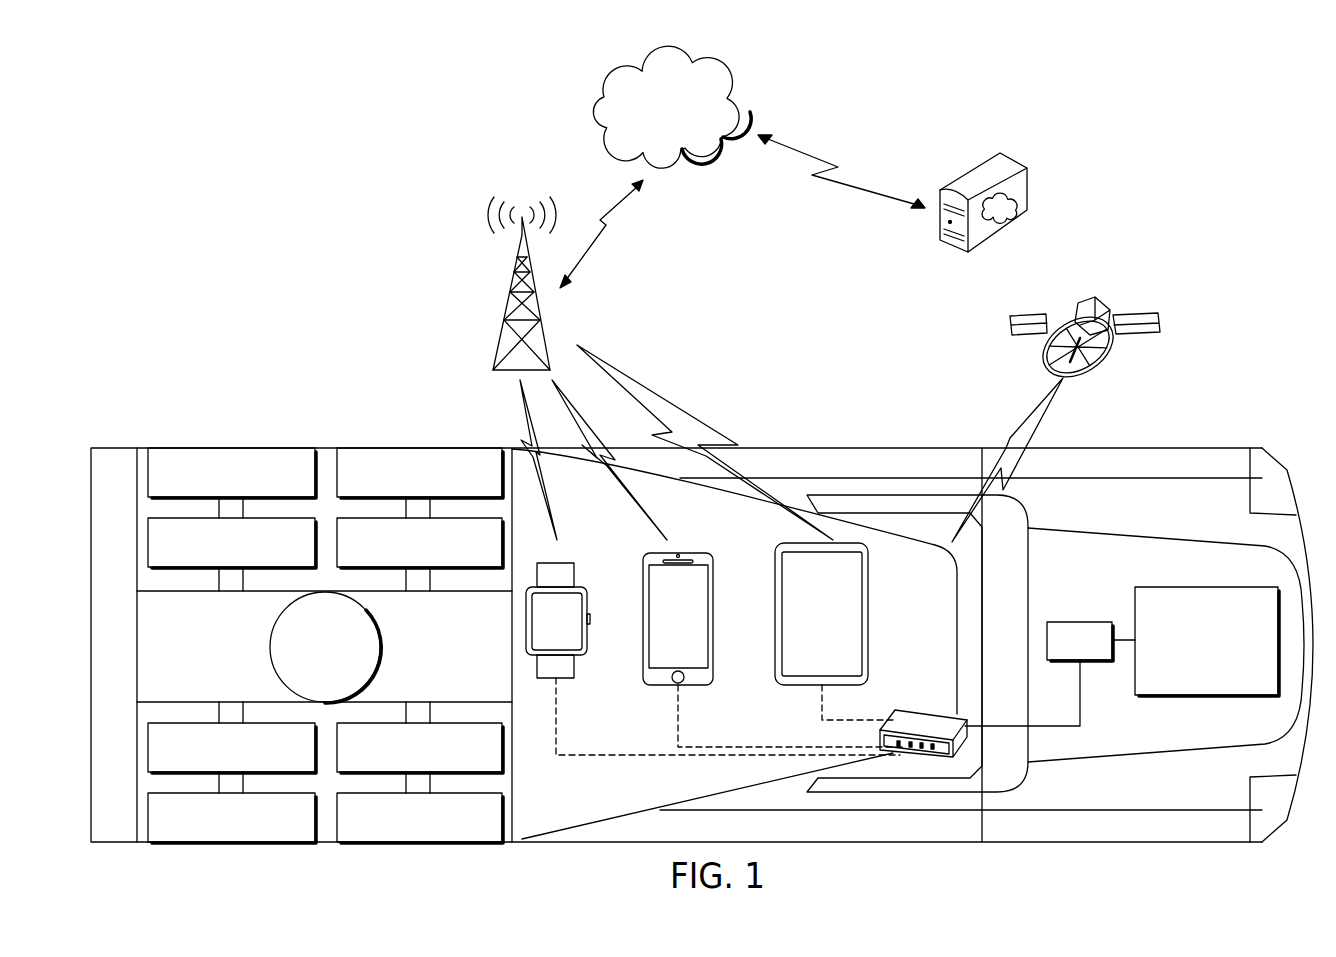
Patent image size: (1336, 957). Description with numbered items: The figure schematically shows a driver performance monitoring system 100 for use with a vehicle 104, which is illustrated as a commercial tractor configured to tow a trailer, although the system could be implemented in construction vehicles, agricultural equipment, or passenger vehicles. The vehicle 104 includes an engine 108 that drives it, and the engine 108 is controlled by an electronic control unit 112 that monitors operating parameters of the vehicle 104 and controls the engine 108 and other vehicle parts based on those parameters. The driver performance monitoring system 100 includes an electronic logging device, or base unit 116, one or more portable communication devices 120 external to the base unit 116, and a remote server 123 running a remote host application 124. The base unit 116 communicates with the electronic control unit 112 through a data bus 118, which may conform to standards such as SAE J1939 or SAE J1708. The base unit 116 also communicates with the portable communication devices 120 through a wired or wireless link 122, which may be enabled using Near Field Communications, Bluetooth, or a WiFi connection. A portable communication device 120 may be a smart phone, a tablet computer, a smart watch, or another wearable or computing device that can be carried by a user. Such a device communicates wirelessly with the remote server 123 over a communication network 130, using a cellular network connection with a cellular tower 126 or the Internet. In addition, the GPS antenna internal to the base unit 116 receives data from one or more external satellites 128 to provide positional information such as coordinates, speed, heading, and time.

The driver performance monitoring system 100 is at (1173, 146).
The vehicle 104 is at (1151, 447).
The engine 108 is at (1207, 697).
The electronic control unit (ECU) 112 is at (1080, 621).
The electronic logging device (ELD) / base unit 116 is at (929, 710).
The data bus 118 is at (1080, 713).
The portable communication devices 120 is at (588, 603).
The wired or wireless link 122 is at (605, 753).
The remote server 123 is at (967, 172).
The remote host application 124 is at (1017, 213).
The cellular tower 126 is at (506, 302).
The external satellites 128 is at (1112, 299).
The communication network 130 is at (598, 123).